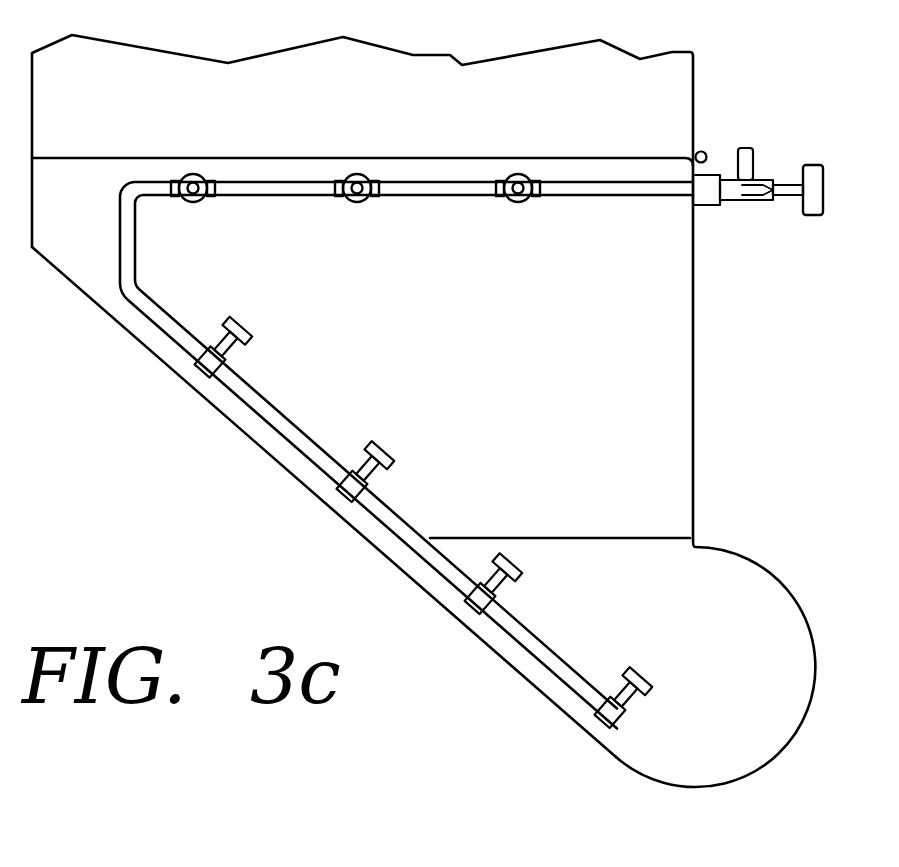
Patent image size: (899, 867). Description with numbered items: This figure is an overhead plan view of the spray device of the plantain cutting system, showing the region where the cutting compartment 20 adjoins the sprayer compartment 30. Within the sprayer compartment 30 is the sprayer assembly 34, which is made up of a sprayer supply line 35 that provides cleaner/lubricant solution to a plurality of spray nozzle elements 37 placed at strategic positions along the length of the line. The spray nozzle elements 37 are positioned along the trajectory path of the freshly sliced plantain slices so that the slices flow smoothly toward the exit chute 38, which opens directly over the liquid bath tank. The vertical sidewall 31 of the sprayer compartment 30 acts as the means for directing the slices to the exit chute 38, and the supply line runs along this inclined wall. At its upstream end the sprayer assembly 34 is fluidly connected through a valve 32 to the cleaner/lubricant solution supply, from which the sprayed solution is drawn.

The cutting compartment 20 is at (343, 128).
The sprayer compartment 30 is at (500, 388).
The vertical sidewall 31 is at (267, 457).
The valve 32 is at (765, 203).
The sprayer assembly 34 is at (613, 200).
The sprayer supply line 35 is at (454, 193).
The spray nozzle elements 37 is at (355, 205).
The exit chute 38 is at (698, 682).